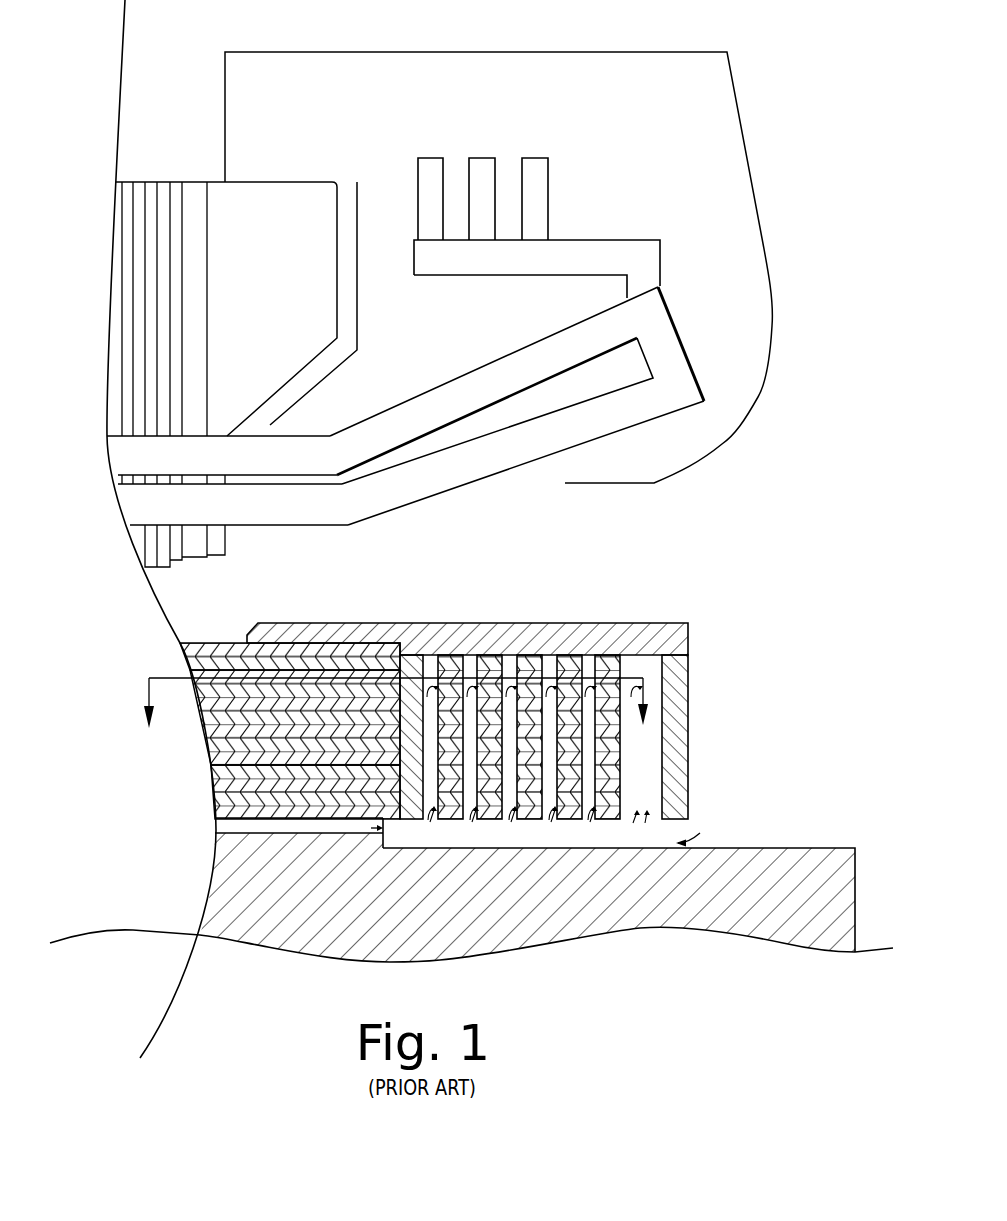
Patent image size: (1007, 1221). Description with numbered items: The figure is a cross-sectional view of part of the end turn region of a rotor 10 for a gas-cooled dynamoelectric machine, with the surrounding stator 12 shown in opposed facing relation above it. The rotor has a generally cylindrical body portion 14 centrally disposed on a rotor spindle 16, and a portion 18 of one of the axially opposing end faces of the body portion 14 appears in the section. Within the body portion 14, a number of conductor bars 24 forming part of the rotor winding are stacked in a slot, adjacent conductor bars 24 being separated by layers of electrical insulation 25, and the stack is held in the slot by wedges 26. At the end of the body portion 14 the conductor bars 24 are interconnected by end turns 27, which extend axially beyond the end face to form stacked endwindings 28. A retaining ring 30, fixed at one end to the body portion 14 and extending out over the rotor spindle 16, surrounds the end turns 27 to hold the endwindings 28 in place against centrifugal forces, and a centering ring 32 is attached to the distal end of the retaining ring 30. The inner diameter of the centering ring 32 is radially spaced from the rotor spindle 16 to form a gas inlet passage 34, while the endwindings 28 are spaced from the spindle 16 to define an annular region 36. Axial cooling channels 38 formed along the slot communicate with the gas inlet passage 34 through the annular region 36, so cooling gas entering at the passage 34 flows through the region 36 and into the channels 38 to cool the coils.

The rotor 10 is at (470, 687).
The stator 12 is at (797, 230).
The body portion 14 is at (471, 900).
The rotor spindle 16 is at (665, 917).
The portion of end face 18 is at (385, 833).
The conductor bars 24 is at (213, 773).
The layers of electrical insulation 25 is at (195, 698).
The wedges 26 is at (182, 650).
The end turns 27 is at (450, 814).
The stacked endwindings 28 is at (574, 831).
The retaining ring 30 is at (483, 628).
The centering ring 32 is at (678, 717).
The gas inlet passage 34 is at (700, 826).
The annular region 36 is at (538, 847).
The axial cooling channels 38 is at (310, 828).